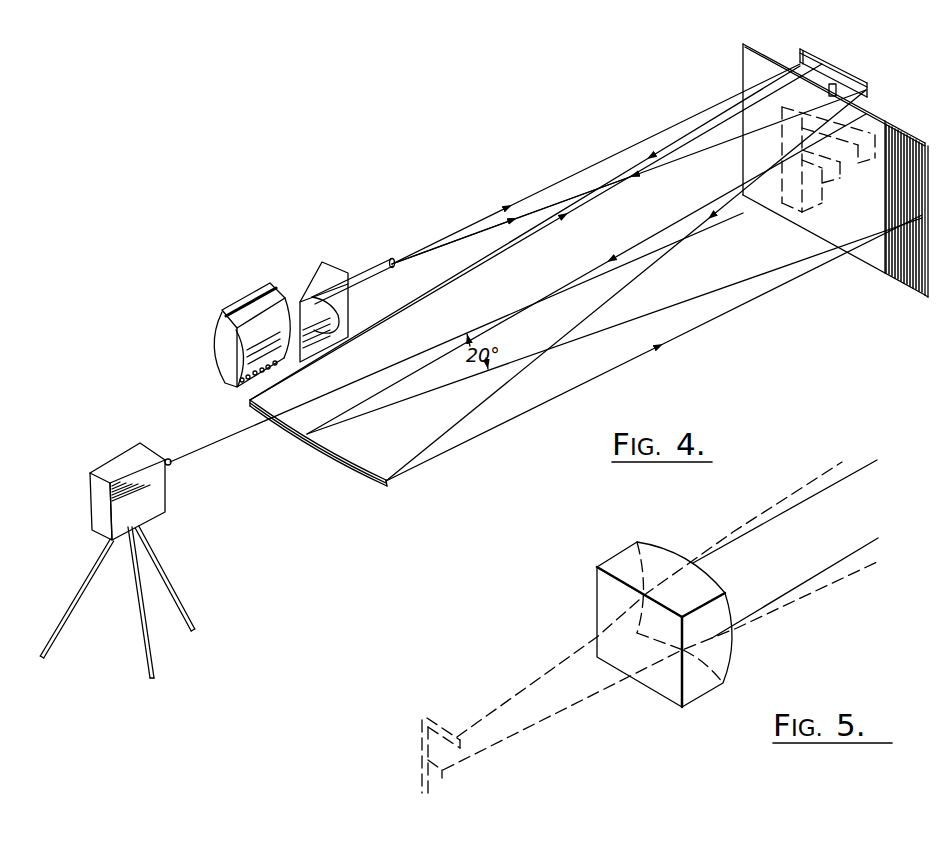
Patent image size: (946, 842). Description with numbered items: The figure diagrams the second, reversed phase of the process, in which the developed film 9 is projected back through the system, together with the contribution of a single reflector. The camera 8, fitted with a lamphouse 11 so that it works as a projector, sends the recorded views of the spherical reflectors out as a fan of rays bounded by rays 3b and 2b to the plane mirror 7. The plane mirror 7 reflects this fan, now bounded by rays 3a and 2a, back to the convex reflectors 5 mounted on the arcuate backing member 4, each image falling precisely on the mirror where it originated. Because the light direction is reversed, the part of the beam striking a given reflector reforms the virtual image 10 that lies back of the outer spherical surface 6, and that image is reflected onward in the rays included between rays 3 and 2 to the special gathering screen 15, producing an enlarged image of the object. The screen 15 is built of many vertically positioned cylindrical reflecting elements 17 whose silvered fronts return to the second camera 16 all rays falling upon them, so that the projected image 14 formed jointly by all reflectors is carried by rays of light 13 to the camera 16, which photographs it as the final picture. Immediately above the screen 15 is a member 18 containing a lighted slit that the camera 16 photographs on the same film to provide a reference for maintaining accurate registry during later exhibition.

In FIG. 4, the ray of light 2 is at (643, 356).
In FIG. 4, the ray 2a is at (662, 258).
In FIG. 4, the ray 2b is at (696, 156).
In FIG. 4, the ray of light 3 is at (533, 238).
In FIG. 4, the ray 3a is at (459, 274).
In FIG. 4, the ray 3b is at (557, 183).
In FIG. 4, the backing member 4 is at (332, 466).
In FIG. 5, the convex reflector 5 is at (688, 593).
In FIG. 5, the outer spherical surface 6 is at (725, 602).
In FIG. 4, the plane mirror 7 is at (822, 73).
In FIG. 4, the camera 8 is at (328, 273).
In FIG. 4, the film 9 is at (317, 306).
In FIG. 5, the virtual image 10 is at (420, 762).
In FIG. 4, the lamphouse 11 is at (285, 300).
In FIG. 4, the rays of light 13 is at (541, 302).
In FIG. 4, the projected image 14 is at (833, 178).
In FIG. 4, the screen 15 is at (808, 224).
In FIG. 4, the second camera 16 is at (155, 487).
In FIG. 4, the cylindrical reflecting element 17 is at (915, 250).
In FIG. 4, the member 18 is at (827, 87).